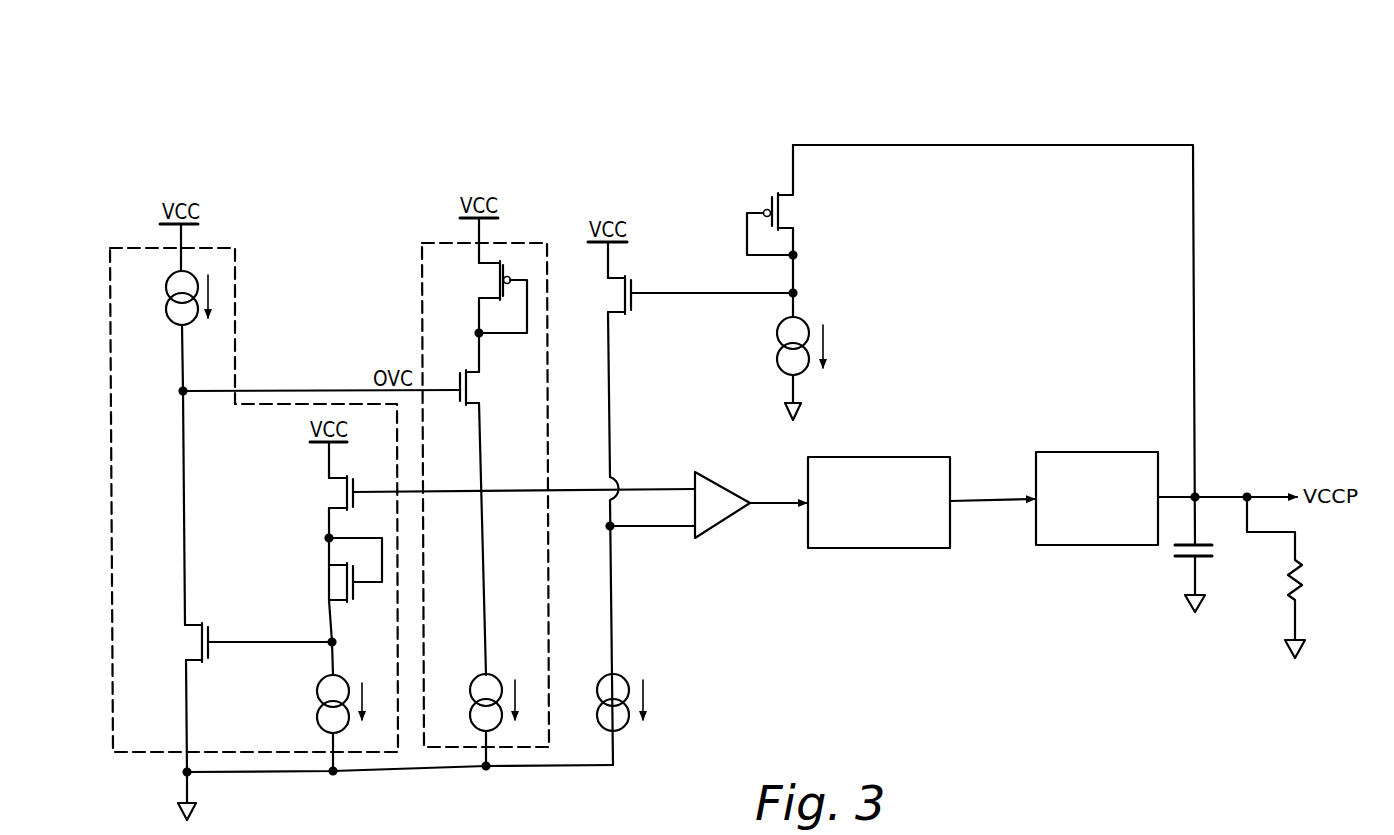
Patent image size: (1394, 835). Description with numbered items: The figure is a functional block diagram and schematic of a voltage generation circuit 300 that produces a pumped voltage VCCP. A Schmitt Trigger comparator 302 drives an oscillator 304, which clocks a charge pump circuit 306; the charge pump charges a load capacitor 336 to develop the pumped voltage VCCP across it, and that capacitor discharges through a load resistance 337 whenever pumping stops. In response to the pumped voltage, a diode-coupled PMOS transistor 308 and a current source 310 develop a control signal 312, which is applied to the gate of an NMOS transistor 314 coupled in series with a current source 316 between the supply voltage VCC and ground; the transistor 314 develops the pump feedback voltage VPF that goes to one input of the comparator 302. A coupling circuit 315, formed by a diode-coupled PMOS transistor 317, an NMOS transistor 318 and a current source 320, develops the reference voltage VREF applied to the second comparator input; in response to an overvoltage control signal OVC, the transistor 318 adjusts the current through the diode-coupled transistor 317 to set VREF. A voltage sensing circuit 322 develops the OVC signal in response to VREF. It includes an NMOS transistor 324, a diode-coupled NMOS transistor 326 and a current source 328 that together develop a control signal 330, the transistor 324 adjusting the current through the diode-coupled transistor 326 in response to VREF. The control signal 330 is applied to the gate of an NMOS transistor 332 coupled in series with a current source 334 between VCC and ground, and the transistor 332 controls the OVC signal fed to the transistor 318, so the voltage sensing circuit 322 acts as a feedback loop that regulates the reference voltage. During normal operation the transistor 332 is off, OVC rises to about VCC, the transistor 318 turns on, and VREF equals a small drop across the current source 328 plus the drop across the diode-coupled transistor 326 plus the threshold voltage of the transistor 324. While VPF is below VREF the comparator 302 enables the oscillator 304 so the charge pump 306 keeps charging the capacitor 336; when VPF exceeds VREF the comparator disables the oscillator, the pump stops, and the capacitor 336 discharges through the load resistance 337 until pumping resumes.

The voltage generation circuit 300 is at (757, 88).
The Schmitt Trigger comparator 302 is at (716, 480).
The oscillator 304 is at (886, 457).
The charge pump circuit 306 is at (1088, 452).
The diode-coupled PMOS transistor 308 is at (788, 212).
The current source 310 is at (780, 337).
The control signal 312 is at (692, 292).
The NMOS transistor 314 is at (624, 318).
The coupling circuit 315 is at (420, 291).
The current source 316 is at (598, 686).
The diode-coupled PMOS transistor 317 is at (498, 262).
The NMOS transistor 318 is at (470, 410).
The current source 320 is at (471, 686).
The voltage sensing circuit 322 is at (113, 505).
The NMOS transistor 324 is at (345, 500).
The diode-coupled NMOS transistor 326 is at (345, 590).
The current source 328 is at (318, 696).
The control signal 330 is at (300, 648).
The NMOS transistor 332 is at (195, 628).
The current source 334 is at (162, 312).
The load capacitor 336 is at (1205, 562).
The load resistance 337 is at (1302, 596).